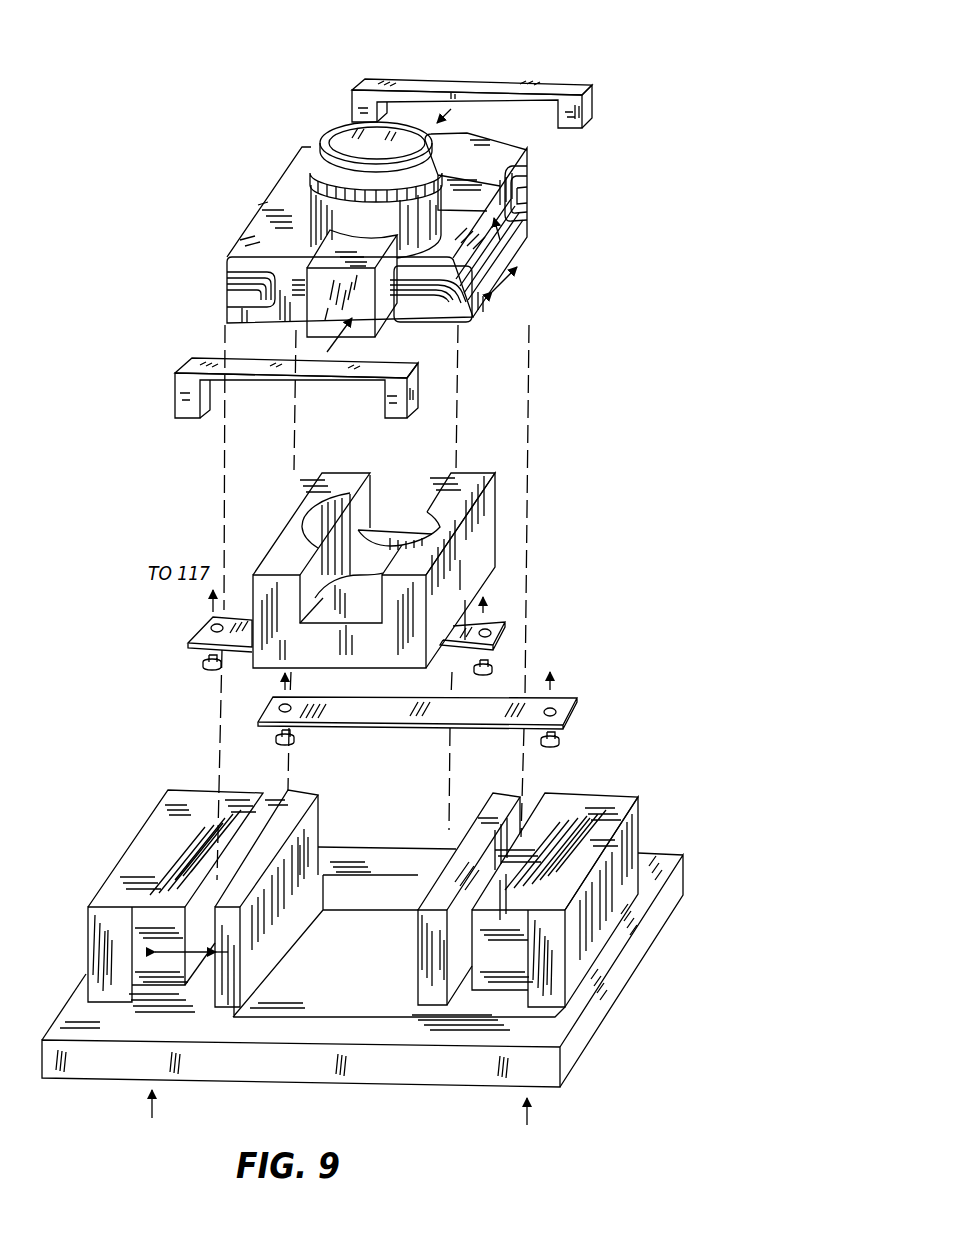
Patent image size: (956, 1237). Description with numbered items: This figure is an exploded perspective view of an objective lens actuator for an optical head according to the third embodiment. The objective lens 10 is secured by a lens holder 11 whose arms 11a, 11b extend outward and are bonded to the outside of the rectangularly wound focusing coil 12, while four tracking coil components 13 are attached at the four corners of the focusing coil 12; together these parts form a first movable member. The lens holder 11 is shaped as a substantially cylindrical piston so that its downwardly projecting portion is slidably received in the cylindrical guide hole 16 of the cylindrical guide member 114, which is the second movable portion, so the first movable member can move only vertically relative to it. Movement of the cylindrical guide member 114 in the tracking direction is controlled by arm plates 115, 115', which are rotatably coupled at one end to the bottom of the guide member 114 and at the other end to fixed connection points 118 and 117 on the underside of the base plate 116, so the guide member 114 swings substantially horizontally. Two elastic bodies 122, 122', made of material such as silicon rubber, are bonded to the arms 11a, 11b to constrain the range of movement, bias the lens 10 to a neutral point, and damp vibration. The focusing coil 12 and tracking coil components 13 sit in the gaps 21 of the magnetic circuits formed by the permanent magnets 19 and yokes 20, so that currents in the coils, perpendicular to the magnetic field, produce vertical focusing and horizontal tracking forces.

The objective lens 10 is at (353, 140).
The lens holder 11 is at (318, 193).
The arm 11a is at (357, 260).
The arm 11b is at (453, 137).
The focusing coil 12 is at (488, 259).
The tracking coil components 13 is at (463, 322).
The elastic body 122 is at (296, 393).
The elastic body 122' is at (472, 88).
The cylindrical guide hole 16 is at (315, 532).
The cylindrical guide member 114 is at (476, 532).
The arm plate 115 is at (428, 707).
The arm plate 115' is at (183, 630).
The permanent magnet 19 is at (565, 805).
The yoke 20 is at (597, 922).
The gap 21 is at (460, 957).
The base plate 116 is at (662, 860).
The connection point 117 is at (138, 1118).
The connection point 118 is at (526, 1126).